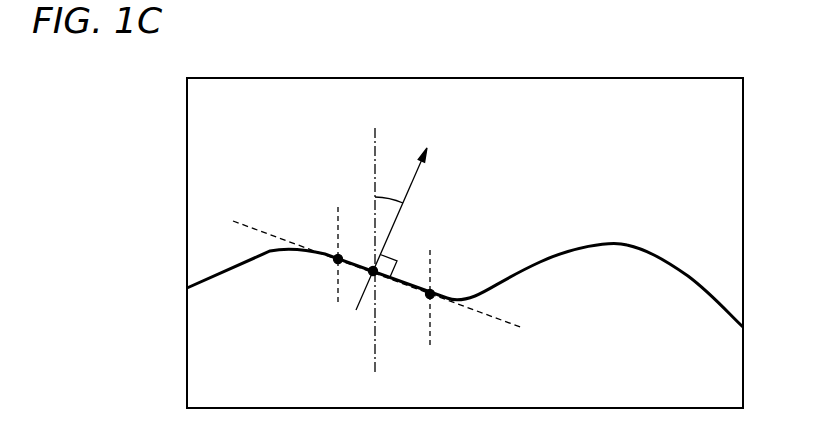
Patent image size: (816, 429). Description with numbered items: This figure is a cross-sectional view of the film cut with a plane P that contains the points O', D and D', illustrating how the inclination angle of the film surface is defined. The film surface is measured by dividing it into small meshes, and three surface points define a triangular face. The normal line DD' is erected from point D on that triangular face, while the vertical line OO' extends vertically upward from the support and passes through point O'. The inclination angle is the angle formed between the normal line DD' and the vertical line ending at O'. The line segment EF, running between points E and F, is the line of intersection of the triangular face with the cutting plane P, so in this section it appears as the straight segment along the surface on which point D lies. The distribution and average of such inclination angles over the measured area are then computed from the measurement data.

The vertical line endpoint O' is at (366, 238).
The normal line endpoint D' is at (406, 225).
The intersection point F is at (329, 256).
The normal line origin D is at (384, 294).
The intersection point E is at (441, 299).